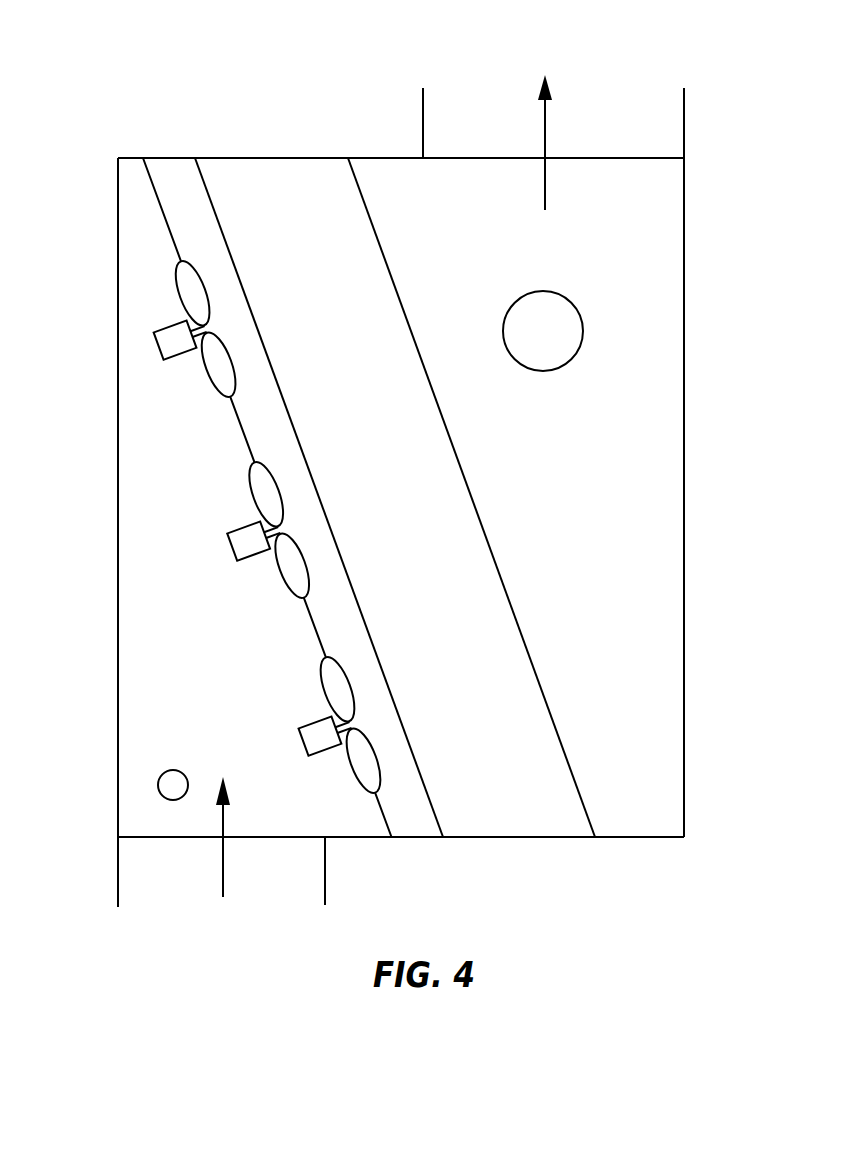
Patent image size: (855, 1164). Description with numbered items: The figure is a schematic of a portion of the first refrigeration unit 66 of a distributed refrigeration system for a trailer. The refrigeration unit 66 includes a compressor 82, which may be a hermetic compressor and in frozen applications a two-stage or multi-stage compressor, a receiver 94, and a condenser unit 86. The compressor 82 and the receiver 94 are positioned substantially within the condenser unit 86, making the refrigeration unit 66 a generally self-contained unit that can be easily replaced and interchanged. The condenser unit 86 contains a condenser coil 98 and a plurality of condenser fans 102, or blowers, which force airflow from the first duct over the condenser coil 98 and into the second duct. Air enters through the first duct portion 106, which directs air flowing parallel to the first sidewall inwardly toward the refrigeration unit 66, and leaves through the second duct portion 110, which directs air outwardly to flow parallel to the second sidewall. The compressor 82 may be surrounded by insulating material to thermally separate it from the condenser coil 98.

The first refrigeration unit 66 is at (82, 95).
The compressor 82 is at (543, 371).
The condenser unit 86 is at (685, 508).
The receiver 94 is at (172, 769).
The condenser coil 98 is at (515, 660).
The condenser fans 102 is at (250, 468).
The first duct portions 106 is at (121, 866).
The second duct portions 110 is at (684, 118).